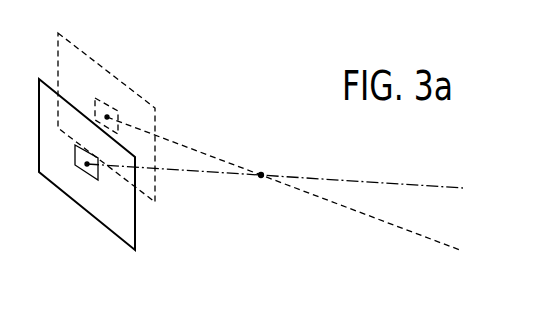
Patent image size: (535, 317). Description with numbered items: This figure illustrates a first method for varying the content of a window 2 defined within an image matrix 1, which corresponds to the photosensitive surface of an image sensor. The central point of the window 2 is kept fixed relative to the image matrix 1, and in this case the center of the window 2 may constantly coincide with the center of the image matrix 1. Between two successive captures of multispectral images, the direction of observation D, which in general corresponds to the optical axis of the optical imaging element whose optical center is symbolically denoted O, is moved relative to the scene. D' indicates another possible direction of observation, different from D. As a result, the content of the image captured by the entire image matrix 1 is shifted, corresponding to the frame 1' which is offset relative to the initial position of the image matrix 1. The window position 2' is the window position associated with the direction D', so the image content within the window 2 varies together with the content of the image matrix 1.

The image matrix 1 is at (81, 164).
The window 2 is at (77, 194).
The frame 1' is at (119, 117).
The window position 2' is at (117, 81).
The optical center O is at (261, 175).
The direction of observation D is at (275, 162).
The other direction of observation D' is at (283, 204).